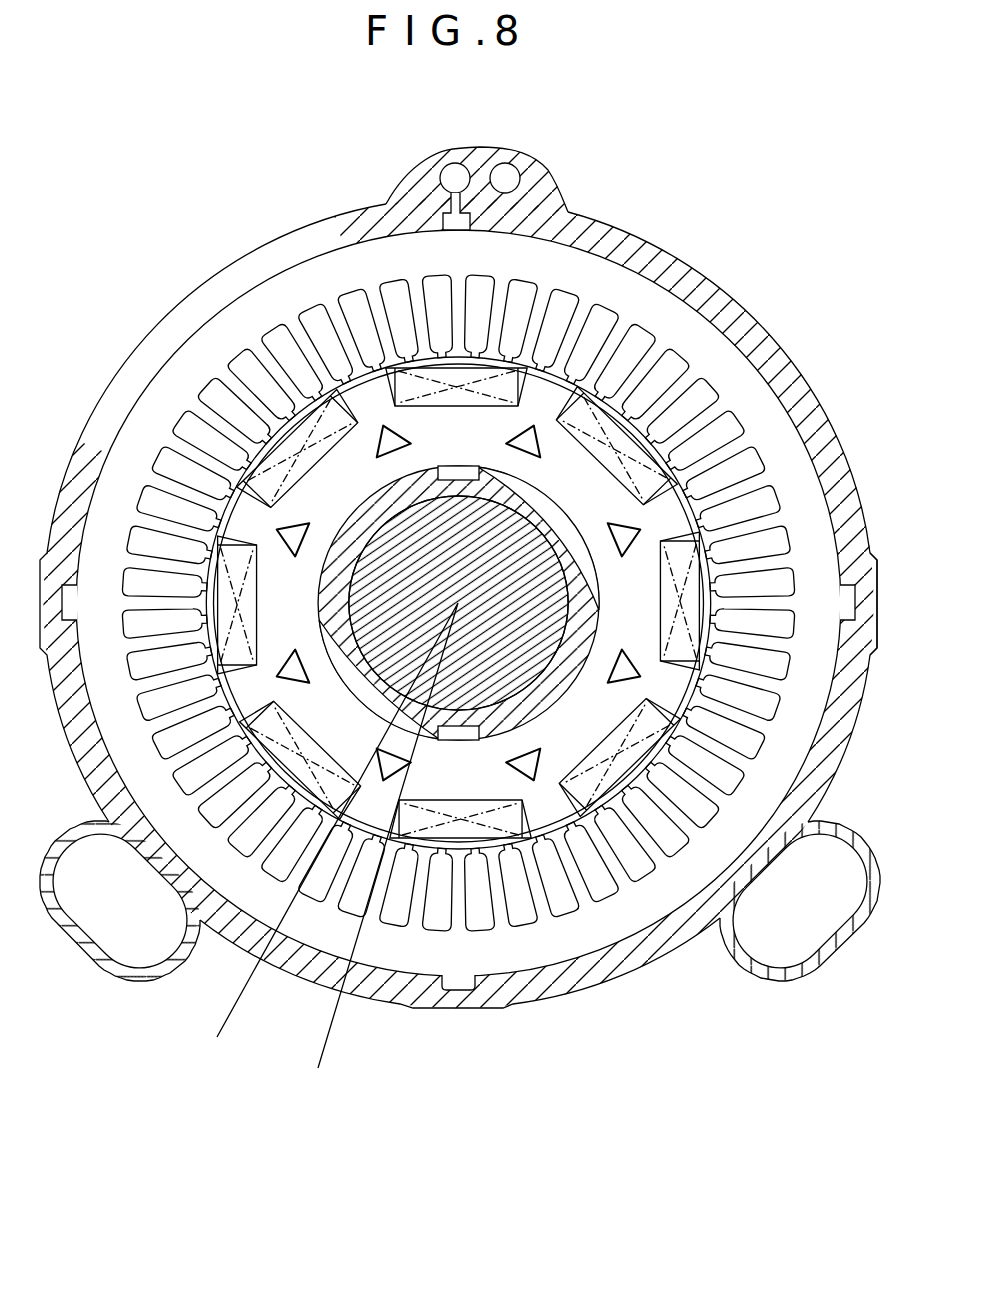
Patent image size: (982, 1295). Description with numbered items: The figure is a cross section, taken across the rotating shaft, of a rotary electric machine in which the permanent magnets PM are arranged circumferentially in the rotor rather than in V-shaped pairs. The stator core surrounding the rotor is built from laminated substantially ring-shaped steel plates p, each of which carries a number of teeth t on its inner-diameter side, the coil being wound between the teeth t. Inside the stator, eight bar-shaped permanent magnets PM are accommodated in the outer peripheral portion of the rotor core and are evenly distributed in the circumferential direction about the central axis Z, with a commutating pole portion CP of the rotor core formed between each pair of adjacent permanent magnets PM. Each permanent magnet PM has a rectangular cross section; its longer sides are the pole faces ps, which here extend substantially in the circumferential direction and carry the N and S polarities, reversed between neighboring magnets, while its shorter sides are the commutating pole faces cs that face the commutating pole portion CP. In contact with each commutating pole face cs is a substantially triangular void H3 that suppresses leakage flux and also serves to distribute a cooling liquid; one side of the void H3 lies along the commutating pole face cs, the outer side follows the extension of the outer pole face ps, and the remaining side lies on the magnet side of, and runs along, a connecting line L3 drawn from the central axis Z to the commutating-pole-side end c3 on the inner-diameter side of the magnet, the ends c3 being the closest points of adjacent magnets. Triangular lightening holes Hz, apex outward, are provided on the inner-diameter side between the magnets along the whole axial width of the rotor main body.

The steel plate p is at (215, 335).
The permanent magnet PM is at (613, 440).
The teeth t is at (228, 478).
The lightening hole Hz is at (385, 446).
The commutating pole face cs is at (722, 512).
The pole face ps is at (700, 622).
The central axis Z is at (457, 601).
The commutating-pole-side end c3 is at (338, 775).
The void H3 is at (320, 838).
The commutating pole portion CP is at (370, 808).
The connecting line L3 is at (222, 1013).